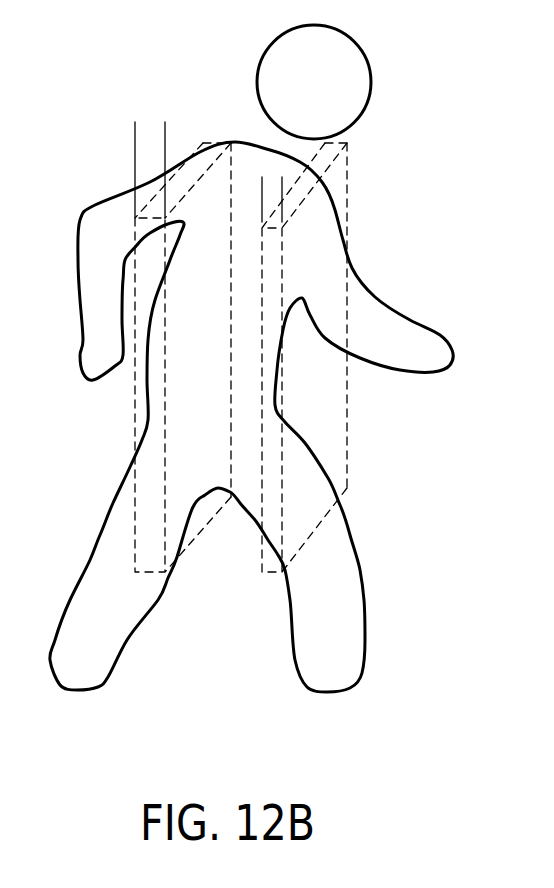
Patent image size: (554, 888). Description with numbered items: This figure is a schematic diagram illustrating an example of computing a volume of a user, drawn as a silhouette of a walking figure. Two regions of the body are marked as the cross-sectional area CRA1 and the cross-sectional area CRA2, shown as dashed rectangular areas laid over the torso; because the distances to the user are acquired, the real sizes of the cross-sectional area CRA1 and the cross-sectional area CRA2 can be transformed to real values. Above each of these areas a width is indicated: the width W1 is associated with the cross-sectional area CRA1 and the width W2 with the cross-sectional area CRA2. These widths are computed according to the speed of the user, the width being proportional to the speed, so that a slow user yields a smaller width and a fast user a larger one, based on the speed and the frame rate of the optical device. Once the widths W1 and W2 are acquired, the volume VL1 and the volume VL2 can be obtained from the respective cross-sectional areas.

The volume VL1 is at (345, 144).
The volume VL2 is at (209, 142).
The width W1 is at (227, 191).
The width W2 is at (197, 134).
The cross-sectional area CRA1 is at (323, 403).
The cross-sectional area CRA2 is at (193, 448).